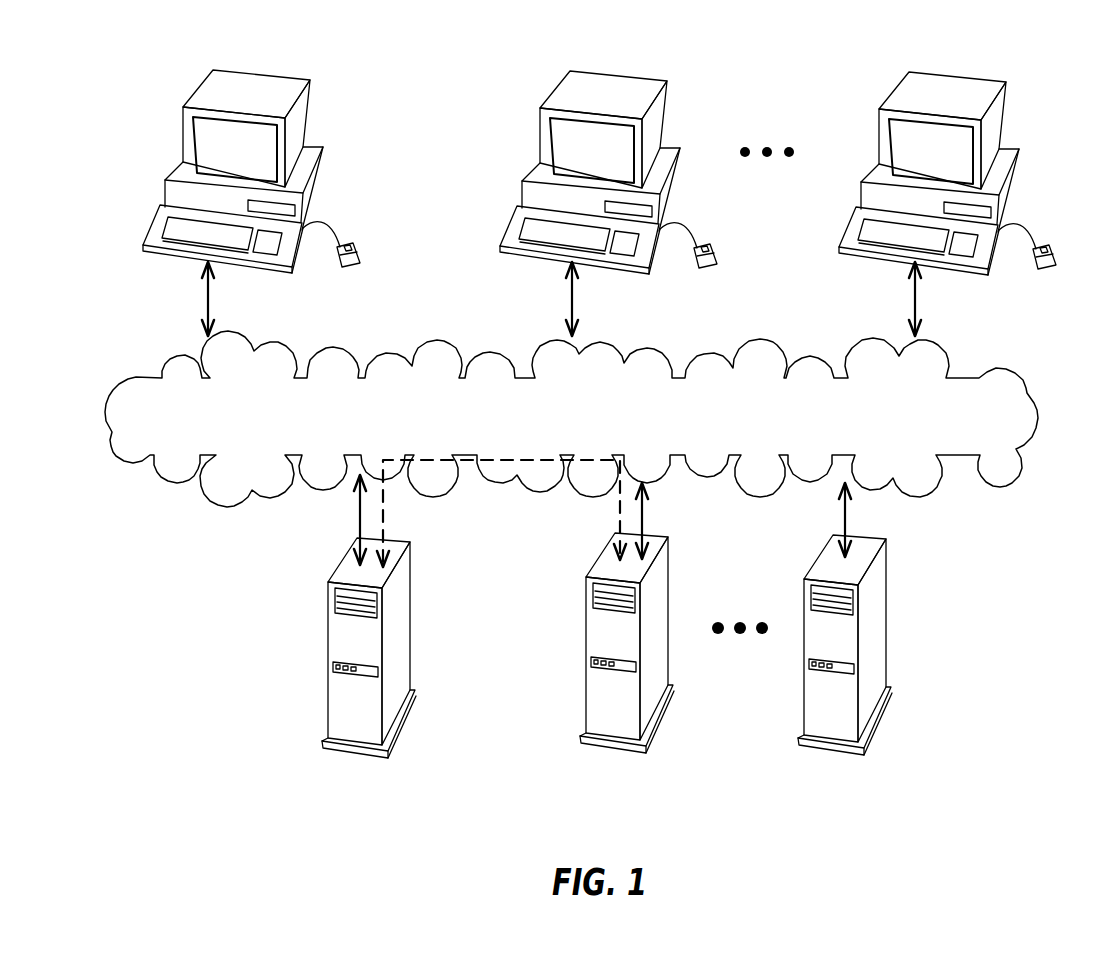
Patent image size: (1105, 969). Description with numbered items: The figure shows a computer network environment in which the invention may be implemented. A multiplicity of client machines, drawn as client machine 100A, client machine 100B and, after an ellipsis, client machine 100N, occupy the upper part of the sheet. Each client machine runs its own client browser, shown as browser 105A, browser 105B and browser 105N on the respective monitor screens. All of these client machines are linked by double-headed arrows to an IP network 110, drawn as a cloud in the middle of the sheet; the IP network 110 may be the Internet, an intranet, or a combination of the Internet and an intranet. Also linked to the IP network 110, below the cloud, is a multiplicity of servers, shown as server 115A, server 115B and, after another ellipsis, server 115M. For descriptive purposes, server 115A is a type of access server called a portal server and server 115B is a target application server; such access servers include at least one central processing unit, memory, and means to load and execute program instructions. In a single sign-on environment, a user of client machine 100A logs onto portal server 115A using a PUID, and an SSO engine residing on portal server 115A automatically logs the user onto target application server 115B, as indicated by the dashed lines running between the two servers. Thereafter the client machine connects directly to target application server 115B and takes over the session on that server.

The client machine 100A is at (264, 152).
The client machine 100B is at (618, 153).
The client machine 100N is at (954, 156).
The client browser 105A is at (200, 130).
The client browser 105B is at (550, 141).
The client browser 105N is at (888, 140).
The IP network 110 is at (876, 406).
The portal server 115A is at (403, 580).
The target application server 115B is at (657, 572).
The server 115M is at (882, 572).